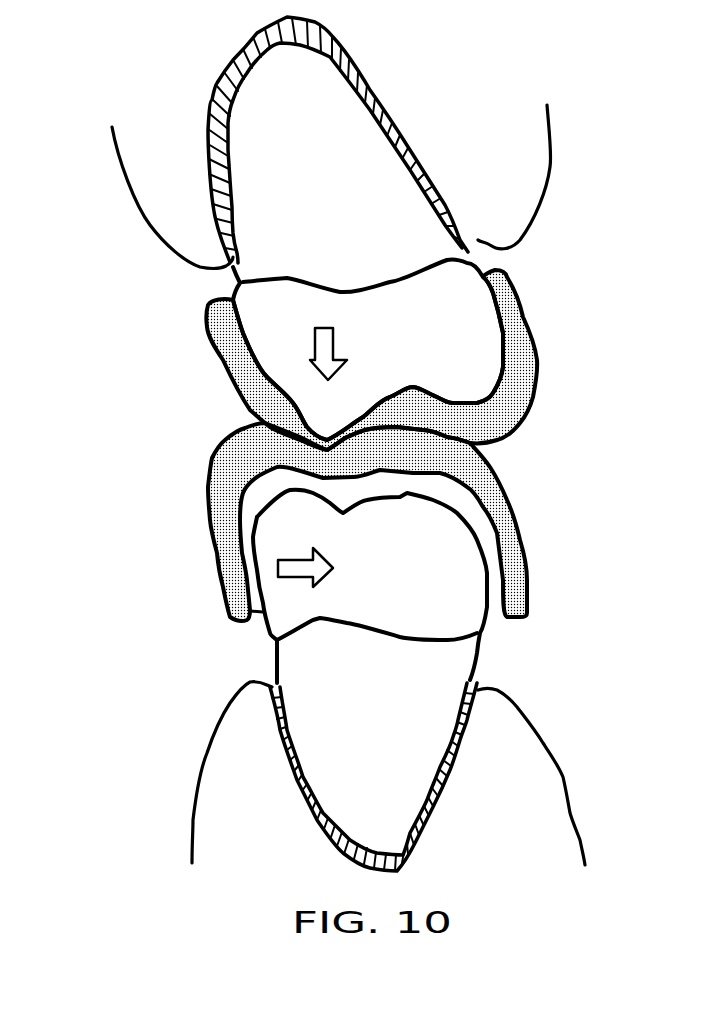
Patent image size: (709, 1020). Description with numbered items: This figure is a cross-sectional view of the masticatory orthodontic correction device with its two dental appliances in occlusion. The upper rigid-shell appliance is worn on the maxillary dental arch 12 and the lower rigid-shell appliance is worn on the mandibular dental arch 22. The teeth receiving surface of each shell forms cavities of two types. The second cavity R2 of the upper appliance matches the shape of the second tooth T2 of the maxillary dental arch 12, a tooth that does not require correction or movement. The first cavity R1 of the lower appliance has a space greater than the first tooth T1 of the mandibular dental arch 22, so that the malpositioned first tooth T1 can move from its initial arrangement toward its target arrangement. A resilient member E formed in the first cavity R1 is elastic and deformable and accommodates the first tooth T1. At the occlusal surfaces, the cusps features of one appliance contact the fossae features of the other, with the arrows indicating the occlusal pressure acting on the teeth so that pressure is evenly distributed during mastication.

The maxillary dental arch 12 is at (520, 180).
The mandibular dental arch 22 is at (530, 800).
The second tooth T2 is at (283, 330).
The first tooth T1 is at (287, 520).
The first cavity R1 is at (397, 427).
The second cavity R2 is at (447, 403).
The resilient member E is at (247, 568).